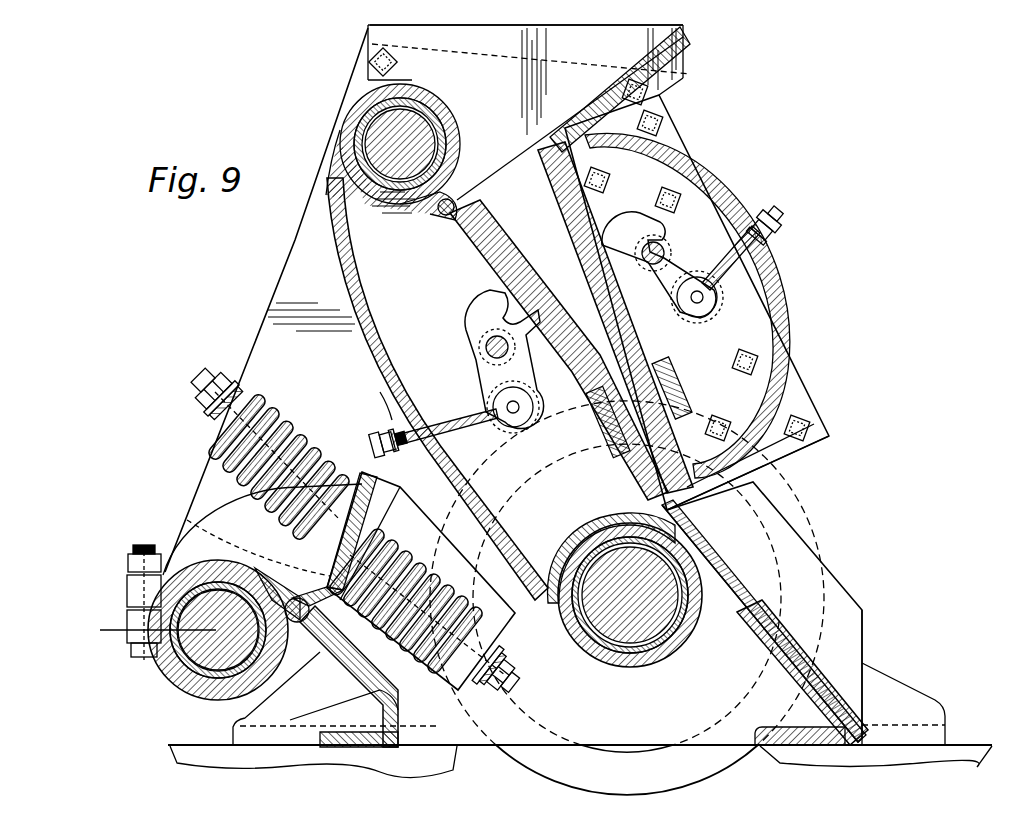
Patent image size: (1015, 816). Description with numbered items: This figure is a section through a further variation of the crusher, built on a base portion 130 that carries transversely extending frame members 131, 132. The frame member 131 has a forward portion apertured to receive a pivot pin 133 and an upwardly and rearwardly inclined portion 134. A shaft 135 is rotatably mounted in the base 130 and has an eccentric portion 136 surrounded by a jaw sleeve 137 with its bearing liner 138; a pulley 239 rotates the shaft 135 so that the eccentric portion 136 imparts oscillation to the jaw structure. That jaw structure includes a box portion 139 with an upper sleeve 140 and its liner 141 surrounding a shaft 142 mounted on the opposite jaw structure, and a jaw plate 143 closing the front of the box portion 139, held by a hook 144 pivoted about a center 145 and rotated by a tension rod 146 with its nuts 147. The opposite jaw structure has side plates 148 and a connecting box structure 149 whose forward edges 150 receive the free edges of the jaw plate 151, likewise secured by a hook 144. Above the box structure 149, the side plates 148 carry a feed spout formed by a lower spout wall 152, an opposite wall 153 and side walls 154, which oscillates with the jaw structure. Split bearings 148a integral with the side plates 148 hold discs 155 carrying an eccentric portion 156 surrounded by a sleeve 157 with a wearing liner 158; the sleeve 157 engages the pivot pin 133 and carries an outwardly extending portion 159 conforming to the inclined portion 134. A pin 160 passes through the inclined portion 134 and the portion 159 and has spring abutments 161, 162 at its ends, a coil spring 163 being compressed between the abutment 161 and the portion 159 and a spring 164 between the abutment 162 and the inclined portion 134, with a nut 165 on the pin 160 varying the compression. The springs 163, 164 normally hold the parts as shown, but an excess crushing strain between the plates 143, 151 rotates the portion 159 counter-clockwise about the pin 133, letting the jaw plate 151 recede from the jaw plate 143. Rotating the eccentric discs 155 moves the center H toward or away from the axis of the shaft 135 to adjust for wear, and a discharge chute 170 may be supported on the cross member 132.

The base portion 130 is at (920, 700).
The frame member 131 is at (345, 662).
The frame member 132 is at (768, 668).
The pivot pin 133 is at (310, 608).
The inclined portion 134 is at (405, 510).
The shaft 135 is at (681, 630).
The eccentric portion 136 is at (638, 668).
The jaw sleeve 137 is at (615, 664).
The bearing liner 138 is at (574, 654).
The box portion 139 is at (385, 375).
The upper sleeve 140 is at (396, 185).
The liner 141 is at (345, 130).
The shaft 142 is at (442, 205).
The jaw plate 143 is at (518, 256).
The hook 144 is at (490, 305).
The center 145 is at (486, 350).
The tension rod 146 is at (452, 418).
The nuts 147 is at (384, 427).
The side plates 148 is at (290, 262).
The split bearings 148a is at (127, 580).
The box structure 149 is at (780, 340).
The forward edges 150 is at (573, 140).
The jaw plate 151 is at (552, 197).
The lower spout wall 152 is at (685, 42).
The opposite wall 153 is at (420, 68).
The side walls 154 is at (548, 42).
The discs 155 is at (190, 520).
The eccentric portion 156 is at (214, 662).
The sleeve 157 is at (187, 666).
The wearing liner 158 is at (170, 665).
The outwardly extending portion 159 is at (293, 565).
The pin 160 is at (208, 382).
The spring abutment 161 is at (212, 424).
The spring abutment 162 is at (502, 660).
The coil spring 163 is at (232, 462).
The spring 164 is at (412, 658).
The nut 165 is at (206, 406).
The discharge chute 170 is at (745, 595).
The pulley 239 is at (528, 762).
The center H is at (146, 630).